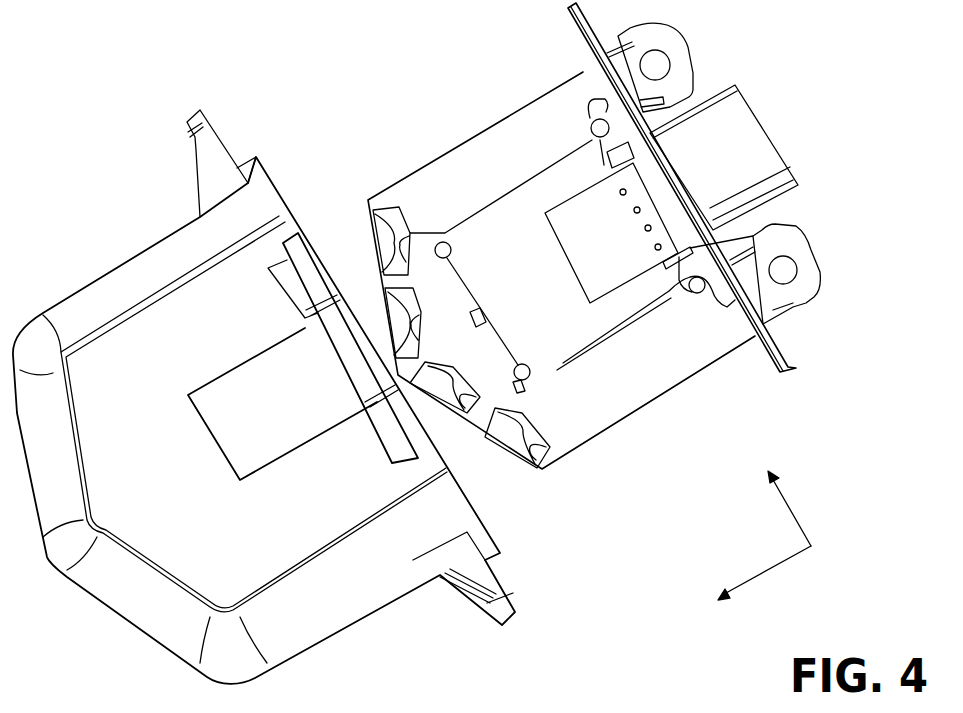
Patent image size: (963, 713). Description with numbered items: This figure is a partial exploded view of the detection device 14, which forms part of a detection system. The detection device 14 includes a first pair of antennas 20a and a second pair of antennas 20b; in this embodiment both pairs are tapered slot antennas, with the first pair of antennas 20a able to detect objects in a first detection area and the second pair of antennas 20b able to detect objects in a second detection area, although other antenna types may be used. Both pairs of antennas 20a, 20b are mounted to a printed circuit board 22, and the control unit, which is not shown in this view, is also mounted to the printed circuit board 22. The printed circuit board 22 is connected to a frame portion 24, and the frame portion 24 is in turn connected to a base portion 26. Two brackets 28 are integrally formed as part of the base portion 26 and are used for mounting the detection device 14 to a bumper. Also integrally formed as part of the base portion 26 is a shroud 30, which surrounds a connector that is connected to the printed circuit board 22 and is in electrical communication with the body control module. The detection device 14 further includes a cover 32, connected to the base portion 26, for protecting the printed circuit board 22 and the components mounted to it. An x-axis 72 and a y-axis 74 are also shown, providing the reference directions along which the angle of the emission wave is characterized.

The detection device 14 is at (622, 606).
The first pair of antennas 20a is at (483, 445).
The second pair of antennas 20b is at (355, 258).
The printed circuit board 22 is at (497, 143).
The frame portion 24 is at (607, 313).
The base portion 26 is at (781, 373).
The brackets 28 is at (672, 44).
The shroud 30 is at (737, 126).
The cover 32 is at (272, 548).
The x-axis 72 is at (812, 550).
The y-axis 74 is at (785, 503).